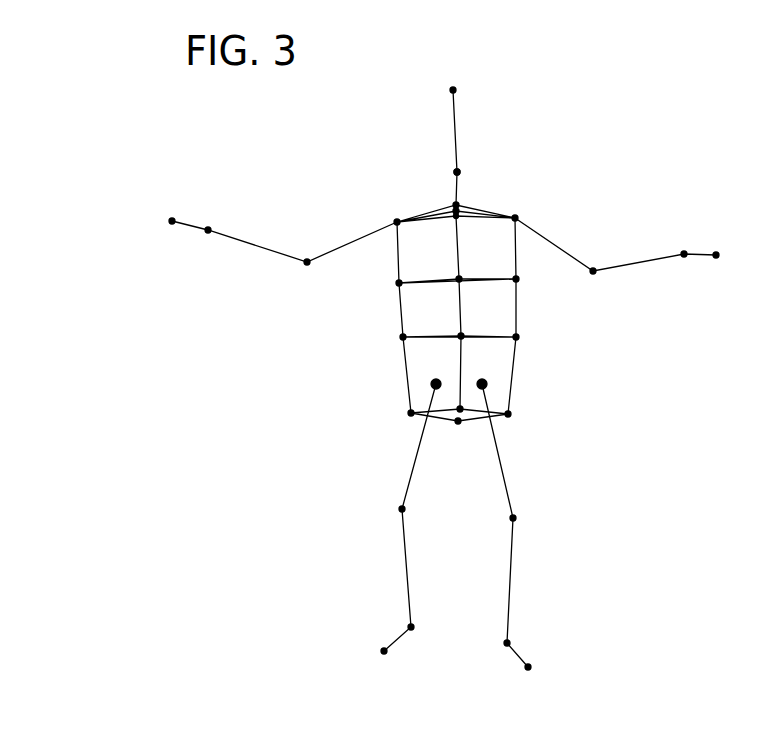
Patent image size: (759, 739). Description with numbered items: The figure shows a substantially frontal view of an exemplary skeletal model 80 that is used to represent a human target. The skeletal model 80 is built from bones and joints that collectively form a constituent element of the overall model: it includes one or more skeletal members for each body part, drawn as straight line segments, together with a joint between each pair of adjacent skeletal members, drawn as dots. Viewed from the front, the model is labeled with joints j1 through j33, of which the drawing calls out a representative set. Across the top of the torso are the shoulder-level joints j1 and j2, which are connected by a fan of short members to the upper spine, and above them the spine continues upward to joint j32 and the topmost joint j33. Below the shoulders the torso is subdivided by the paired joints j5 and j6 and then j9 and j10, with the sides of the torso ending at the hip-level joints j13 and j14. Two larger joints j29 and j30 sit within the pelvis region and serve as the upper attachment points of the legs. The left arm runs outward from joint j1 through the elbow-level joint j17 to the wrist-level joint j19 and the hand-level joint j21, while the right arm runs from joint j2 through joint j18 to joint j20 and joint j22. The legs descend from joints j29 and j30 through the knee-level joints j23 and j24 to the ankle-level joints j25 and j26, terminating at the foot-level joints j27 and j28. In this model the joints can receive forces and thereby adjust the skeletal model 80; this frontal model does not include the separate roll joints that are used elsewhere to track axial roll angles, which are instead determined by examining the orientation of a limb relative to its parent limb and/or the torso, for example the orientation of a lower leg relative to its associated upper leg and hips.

The skeletal model 80 is at (586, 92).
The joint j1 is at (391, 220).
The joint j2 is at (521, 216).
The joint j5 is at (394, 283).
The joint j6 is at (521, 278).
The joint j9 is at (398, 336).
The joint j10 is at (521, 336).
The joint j13 is at (406, 412).
The joint j14 is at (513, 413).
The joint j17 is at (303, 266).
The joint j18 is at (598, 275).
The joint j19 is at (209, 226).
The joint j20 is at (685, 249).
The joint j21 is at (173, 216).
The joint j22 is at (716, 261).
The joint j23 is at (397, 509).
The joint j24 is at (518, 517).
The joint j25 is at (406, 625).
The joint j26 is at (503, 647).
The joint j27 is at (379, 649).
The joint j28 is at (533, 665).
The joint j29 is at (436, 377).
The joint j30 is at (482, 377).
The joint j32 is at (464, 170).
The joint j33 is at (460, 84).